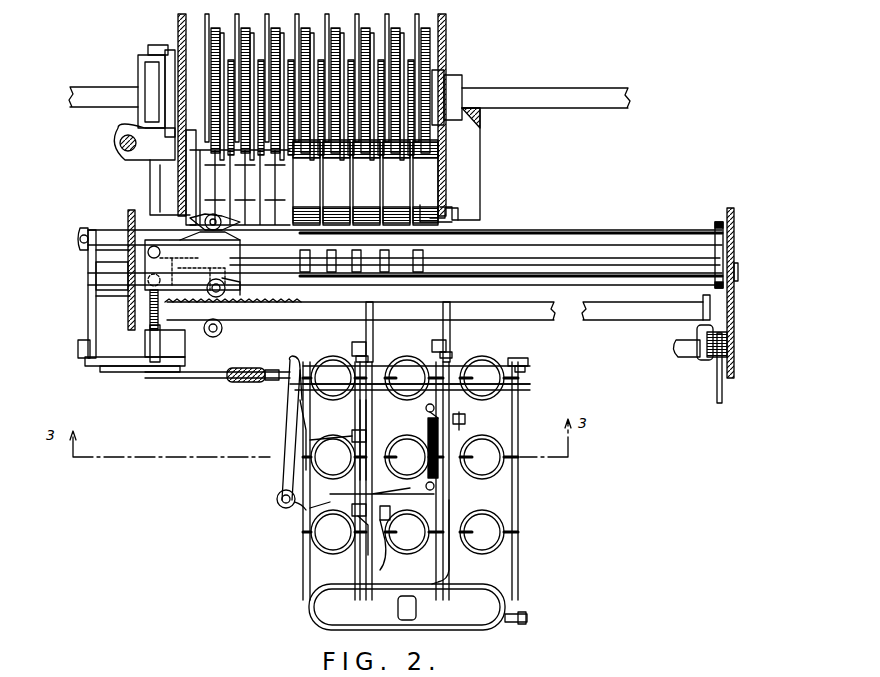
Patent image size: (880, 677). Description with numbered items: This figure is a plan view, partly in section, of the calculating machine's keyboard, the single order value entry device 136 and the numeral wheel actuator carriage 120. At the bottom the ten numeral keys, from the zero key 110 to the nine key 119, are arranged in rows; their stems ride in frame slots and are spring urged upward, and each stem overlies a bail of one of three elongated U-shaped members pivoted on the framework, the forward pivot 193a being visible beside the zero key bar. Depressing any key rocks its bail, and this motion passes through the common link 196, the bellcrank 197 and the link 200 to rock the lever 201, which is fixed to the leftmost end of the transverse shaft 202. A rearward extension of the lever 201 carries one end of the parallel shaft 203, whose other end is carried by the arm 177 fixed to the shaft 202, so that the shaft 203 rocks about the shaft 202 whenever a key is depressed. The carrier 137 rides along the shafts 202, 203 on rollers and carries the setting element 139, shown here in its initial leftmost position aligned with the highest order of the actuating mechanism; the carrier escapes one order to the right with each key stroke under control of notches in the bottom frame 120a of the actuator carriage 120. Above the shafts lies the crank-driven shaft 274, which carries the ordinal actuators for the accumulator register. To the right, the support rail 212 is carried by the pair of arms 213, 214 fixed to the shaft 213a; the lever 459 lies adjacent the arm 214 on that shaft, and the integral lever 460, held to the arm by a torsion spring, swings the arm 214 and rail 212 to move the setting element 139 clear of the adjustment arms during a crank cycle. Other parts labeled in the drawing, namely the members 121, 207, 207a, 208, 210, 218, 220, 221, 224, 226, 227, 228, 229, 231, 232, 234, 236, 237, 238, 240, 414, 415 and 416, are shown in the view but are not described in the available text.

The numeral key 110 is at (332, 608).
The numeral key 119 is at (480, 386).
The actuator carriage 120 is at (550, 168).
The bottom frame 120a is at (470, 124).
The frame plate 121 is at (440, 228).
The value entry device 136 is at (113, 220).
The carrier 137 is at (128, 260).
The setting element 139 is at (210, 252).
The arm 177 is at (722, 256).
The pivot 193a is at (520, 622).
The link 196 is at (208, 380).
The bellcrank 197 is at (138, 372).
The link 200 is at (86, 364).
The lever 201 is at (90, 303).
The transverse shaft 202 is at (598, 268).
The shaft 203 is at (676, 245).
The roller 207 is at (240, 286).
The rack 207a is at (228, 302).
The pawl 208 is at (222, 266).
The stud 210 is at (216, 338).
The support rail 212 is at (540, 314).
The arm 213 is at (150, 338).
The shaft 213a is at (683, 350).
The arm 214 is at (700, 330).
The key stems 218 is at (445, 316).
The key lever 220 is at (368, 406).
The key lever 221 is at (450, 554).
The latch 224 is at (428, 414).
The interlock bar 226 is at (410, 490).
The lever 227 is at (290, 470).
The pivot 228 is at (280, 505).
The lever arm 229 is at (292, 366).
The key lever 231 is at (364, 546).
The key lever 232 is at (386, 546).
The link 234 is at (328, 435).
The stop 236 is at (466, 420).
The key stop 237 is at (355, 346).
The key stop 238 is at (445, 344).
The spring 240 is at (282, 382).
The shaft 274 is at (555, 96).
The bracket 414 is at (178, 200).
The left side plate 415 is at (178, 48).
The right side plate 416 is at (447, 168).
The lever 459 is at (702, 368).
The lever 460 is at (722, 390).